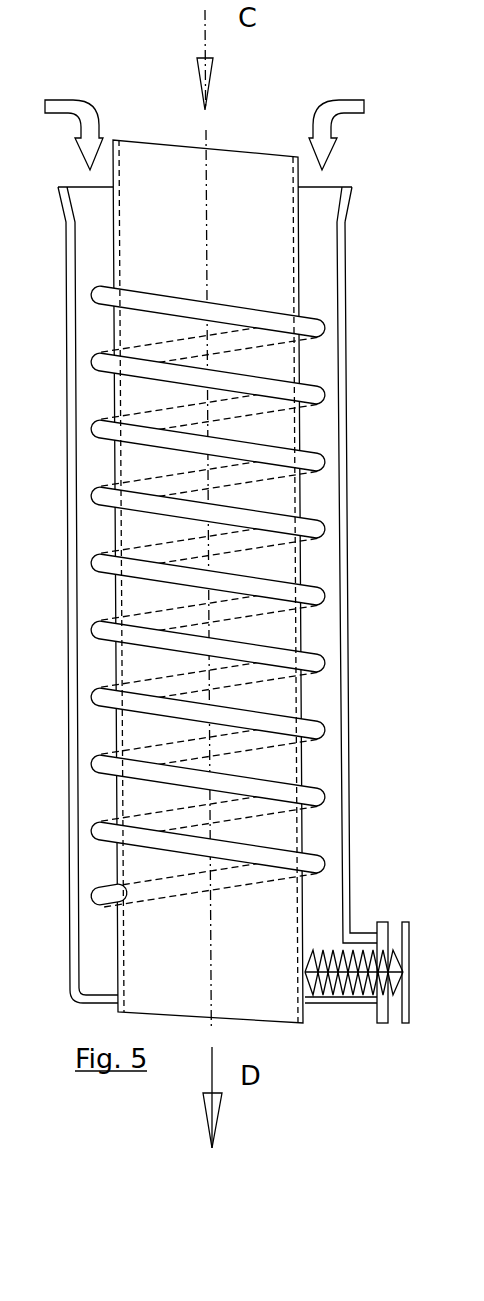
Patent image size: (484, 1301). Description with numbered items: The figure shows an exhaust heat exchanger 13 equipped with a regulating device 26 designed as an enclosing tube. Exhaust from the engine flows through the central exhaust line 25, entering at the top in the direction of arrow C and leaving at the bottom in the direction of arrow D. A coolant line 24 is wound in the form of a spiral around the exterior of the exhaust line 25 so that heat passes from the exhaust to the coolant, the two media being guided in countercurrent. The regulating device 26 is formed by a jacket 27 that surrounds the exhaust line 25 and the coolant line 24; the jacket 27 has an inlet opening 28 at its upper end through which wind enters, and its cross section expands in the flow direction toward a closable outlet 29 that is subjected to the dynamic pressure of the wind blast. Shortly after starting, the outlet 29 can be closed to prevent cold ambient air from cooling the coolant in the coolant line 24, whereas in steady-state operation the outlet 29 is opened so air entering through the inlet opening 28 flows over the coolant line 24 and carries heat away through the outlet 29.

The exhaust heat exchanger 13 is at (231, 130).
The coolant line 24 is at (313, 328).
The exhaust line 25 is at (298, 248).
The regulating device 26 is at (362, 438).
The jacket 27 is at (348, 560).
The inlet opening 28 is at (320, 190).
The outlet 29 is at (380, 922).